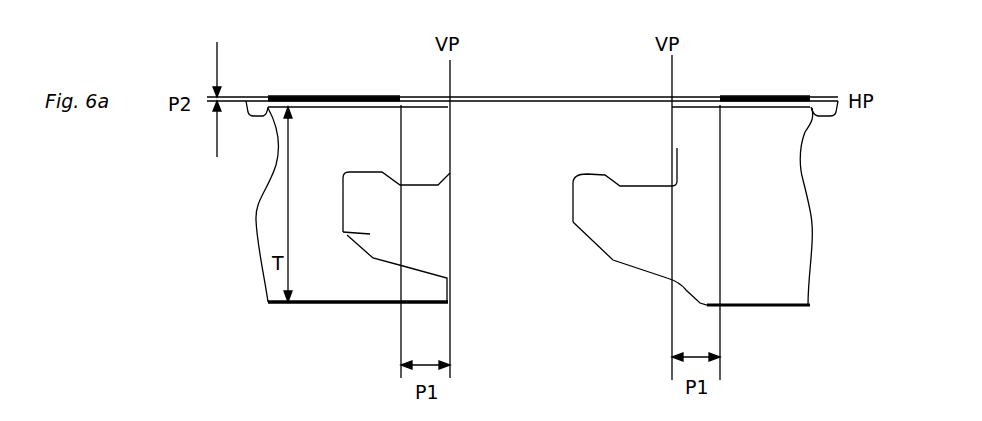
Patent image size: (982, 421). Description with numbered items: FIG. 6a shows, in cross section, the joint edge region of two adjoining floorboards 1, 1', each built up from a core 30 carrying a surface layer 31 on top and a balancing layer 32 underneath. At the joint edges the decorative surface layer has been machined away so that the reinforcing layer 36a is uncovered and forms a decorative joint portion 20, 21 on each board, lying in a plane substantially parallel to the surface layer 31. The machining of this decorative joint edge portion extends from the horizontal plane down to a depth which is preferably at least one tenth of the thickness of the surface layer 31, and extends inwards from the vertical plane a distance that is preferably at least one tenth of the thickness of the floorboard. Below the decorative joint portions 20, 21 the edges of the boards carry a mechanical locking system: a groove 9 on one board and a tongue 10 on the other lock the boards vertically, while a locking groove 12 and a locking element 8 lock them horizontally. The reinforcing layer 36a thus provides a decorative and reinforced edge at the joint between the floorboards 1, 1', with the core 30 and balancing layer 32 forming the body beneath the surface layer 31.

The floorboard 1 is at (358, 69).
The floorboard 1' is at (741, 73).
The locking element 8 is at (590, 183).
The groove 9 is at (350, 235).
The tongue 10 is at (603, 223).
The locking groove 12 is at (366, 175).
The decorative joint portion 20 is at (420, 96).
The decorative joint portion 21 is at (699, 96).
The core 30 is at (282, 222).
The surface layer 31 is at (298, 95).
The balancing layer 32 is at (268, 298).
The reinforcing layer 36a is at (246, 96).